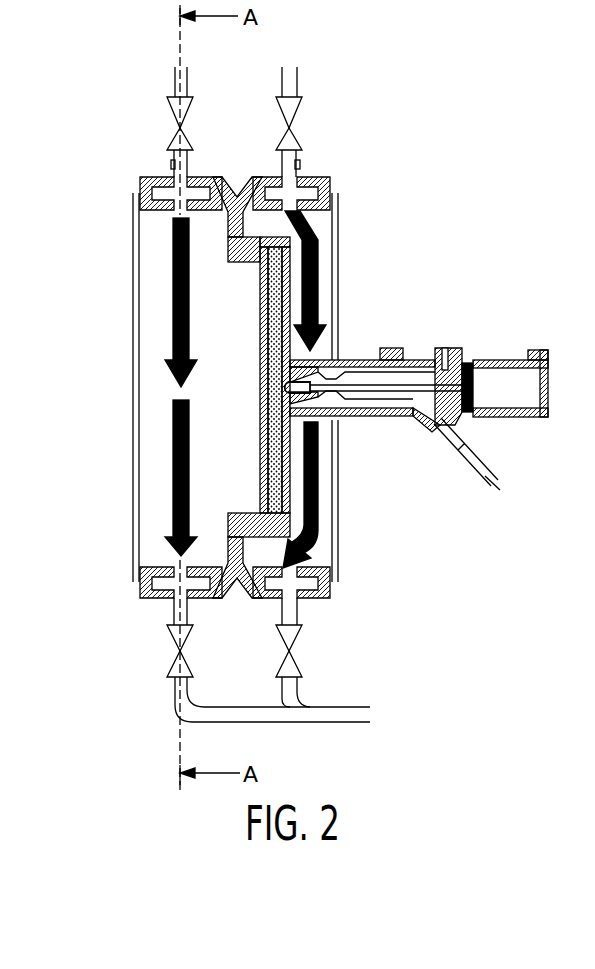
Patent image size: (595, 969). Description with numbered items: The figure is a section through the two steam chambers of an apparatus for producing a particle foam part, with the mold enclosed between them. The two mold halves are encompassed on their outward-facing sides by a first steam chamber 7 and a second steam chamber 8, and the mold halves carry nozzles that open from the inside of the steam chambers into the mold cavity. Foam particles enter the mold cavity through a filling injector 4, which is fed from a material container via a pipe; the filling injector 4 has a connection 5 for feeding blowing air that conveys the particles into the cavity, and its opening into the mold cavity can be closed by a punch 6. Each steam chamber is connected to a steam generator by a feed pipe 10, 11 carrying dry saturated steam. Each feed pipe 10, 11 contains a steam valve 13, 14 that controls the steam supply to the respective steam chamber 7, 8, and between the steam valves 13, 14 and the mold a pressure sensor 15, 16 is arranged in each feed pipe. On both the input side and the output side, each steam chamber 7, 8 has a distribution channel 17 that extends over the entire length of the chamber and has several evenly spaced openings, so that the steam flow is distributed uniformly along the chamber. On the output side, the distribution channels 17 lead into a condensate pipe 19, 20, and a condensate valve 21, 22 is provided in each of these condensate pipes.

The filling injector 4 is at (390, 340).
The connection 5 is at (437, 424).
The punch 6 is at (358, 393).
The first steam chamber 7 is at (336, 540).
The second steam chamber 8 is at (133, 385).
The feed pipe 10 is at (297, 80).
The feed pipe 11 is at (175, 80).
The steam valve 13 is at (300, 113).
The steam valve 14 is at (175, 113).
The pressure sensor 15 is at (298, 165).
The pressure sensor 16 is at (172, 165).
The distribution channel 17 is at (163, 190).
The condensate pipe 19 is at (294, 686).
The condensate pipe 20 is at (175, 693).
The condensate valve 21 is at (294, 641).
The condensate valve 22 is at (175, 663).